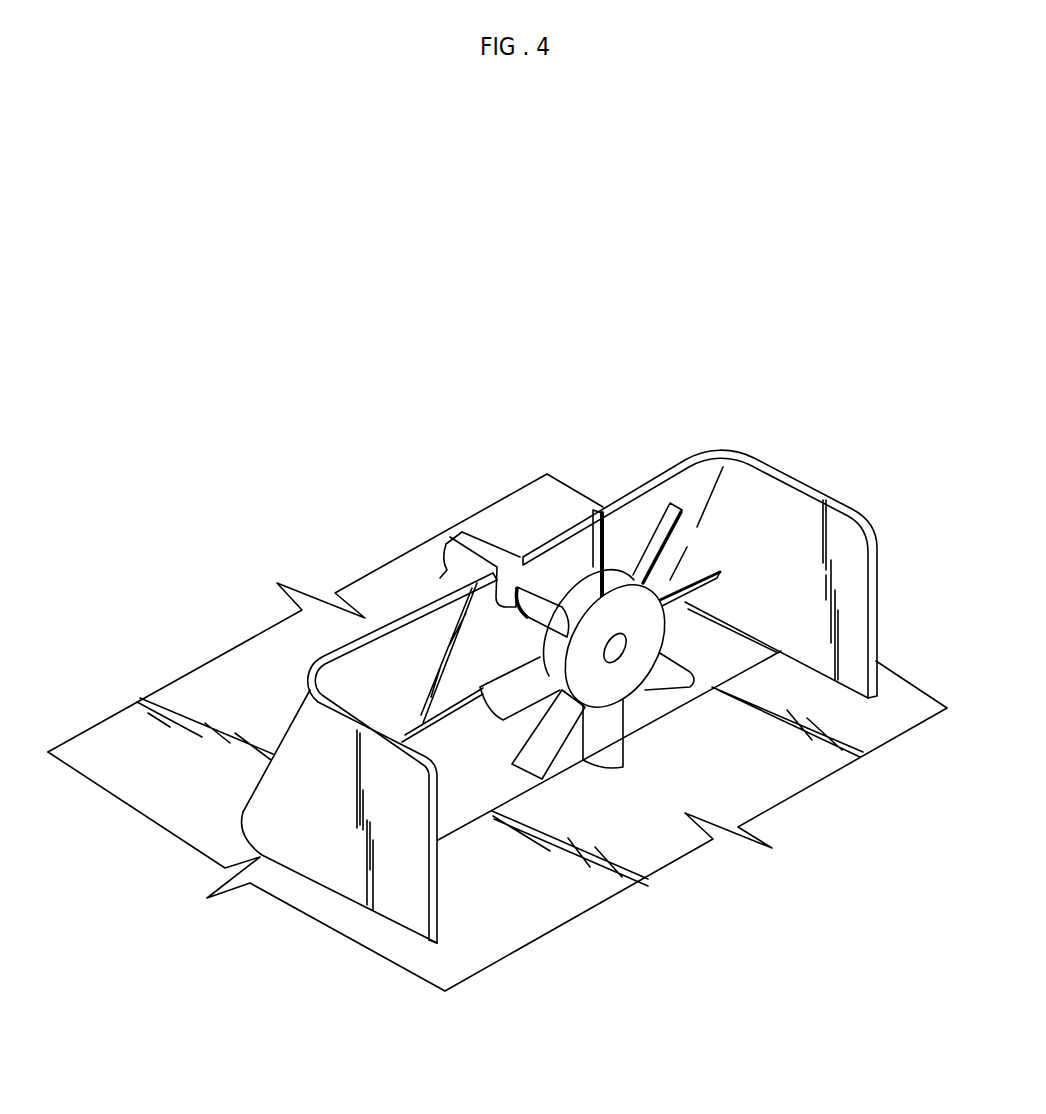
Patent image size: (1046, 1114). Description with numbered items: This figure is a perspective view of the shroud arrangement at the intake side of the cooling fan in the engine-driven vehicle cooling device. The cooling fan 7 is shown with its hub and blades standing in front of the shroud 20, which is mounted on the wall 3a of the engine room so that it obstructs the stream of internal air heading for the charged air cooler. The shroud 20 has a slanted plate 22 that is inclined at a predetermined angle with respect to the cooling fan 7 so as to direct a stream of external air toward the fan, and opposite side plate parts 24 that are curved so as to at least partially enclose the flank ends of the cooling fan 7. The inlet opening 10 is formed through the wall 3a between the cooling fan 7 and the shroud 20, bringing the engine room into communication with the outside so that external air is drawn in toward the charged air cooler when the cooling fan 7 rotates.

The base plate 3a is at (500, 938).
The fan 7 is at (620, 570).
The support plate 10 is at (478, 802).
The wind guide 20 is at (375, 607).
The guide plate 22 is at (400, 627).
The side panel 24 is at (400, 887).